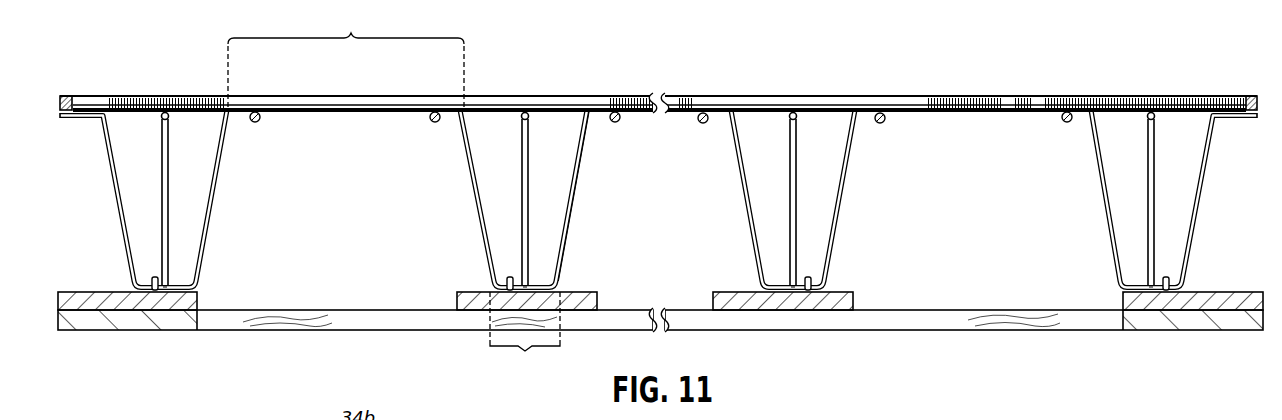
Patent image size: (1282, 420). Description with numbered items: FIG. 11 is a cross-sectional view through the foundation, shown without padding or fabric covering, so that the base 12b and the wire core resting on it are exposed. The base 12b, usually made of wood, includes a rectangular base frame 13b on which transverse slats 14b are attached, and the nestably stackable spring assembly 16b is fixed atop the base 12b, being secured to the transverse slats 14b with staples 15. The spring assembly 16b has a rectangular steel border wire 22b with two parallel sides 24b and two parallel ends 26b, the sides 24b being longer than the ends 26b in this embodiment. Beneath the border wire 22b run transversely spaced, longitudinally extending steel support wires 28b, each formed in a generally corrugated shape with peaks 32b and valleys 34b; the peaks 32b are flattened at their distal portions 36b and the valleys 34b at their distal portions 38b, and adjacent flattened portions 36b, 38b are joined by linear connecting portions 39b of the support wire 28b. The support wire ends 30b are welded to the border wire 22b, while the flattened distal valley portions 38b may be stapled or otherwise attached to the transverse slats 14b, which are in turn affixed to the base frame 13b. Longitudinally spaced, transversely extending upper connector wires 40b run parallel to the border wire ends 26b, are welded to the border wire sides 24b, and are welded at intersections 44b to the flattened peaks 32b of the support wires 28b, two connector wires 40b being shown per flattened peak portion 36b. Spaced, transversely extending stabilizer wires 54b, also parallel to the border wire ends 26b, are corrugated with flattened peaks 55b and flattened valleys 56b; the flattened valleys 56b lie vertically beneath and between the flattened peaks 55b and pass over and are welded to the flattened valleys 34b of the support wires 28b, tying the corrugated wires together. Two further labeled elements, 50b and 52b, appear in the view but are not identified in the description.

The base 12b is at (66, 268).
The base frame 13b is at (246, 334).
The transverse slats 14b is at (100, 292).
The staples 15 is at (154, 276).
The nestably stackable spring assembly 16b is at (658, 192).
The border wire 22b is at (488, 116).
The sides 24b is at (575, 105).
The ends 26b is at (65, 95).
The support wires 28b is at (217, 217).
The support wire ends 30b is at (66, 121).
The peaks 32b is at (360, 113).
The valleys 34b is at (188, 284).
The flattened distal peak portions 36b is at (346, 57).
The flattened distal valley portions 38b is at (525, 335).
The linear connecting portions 39b is at (588, 213).
The upper connector wires 40b is at (263, 117).
The intersections 44b is at (257, 123).
The bottom layer of deck 50b is at (140, 114).
The top surface of deck 52b is at (143, 95).
The stabilizer wires 54b is at (176, 151).
The flattened peaks 55b is at (171, 117).
The flattened valleys 56b is at (166, 293).